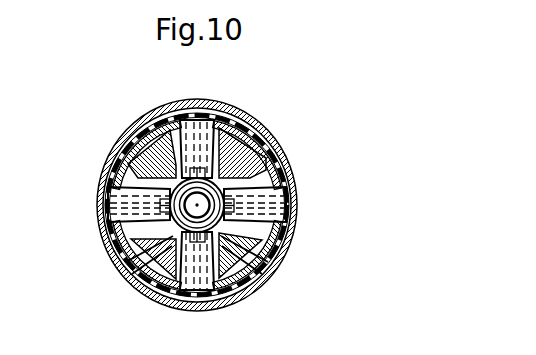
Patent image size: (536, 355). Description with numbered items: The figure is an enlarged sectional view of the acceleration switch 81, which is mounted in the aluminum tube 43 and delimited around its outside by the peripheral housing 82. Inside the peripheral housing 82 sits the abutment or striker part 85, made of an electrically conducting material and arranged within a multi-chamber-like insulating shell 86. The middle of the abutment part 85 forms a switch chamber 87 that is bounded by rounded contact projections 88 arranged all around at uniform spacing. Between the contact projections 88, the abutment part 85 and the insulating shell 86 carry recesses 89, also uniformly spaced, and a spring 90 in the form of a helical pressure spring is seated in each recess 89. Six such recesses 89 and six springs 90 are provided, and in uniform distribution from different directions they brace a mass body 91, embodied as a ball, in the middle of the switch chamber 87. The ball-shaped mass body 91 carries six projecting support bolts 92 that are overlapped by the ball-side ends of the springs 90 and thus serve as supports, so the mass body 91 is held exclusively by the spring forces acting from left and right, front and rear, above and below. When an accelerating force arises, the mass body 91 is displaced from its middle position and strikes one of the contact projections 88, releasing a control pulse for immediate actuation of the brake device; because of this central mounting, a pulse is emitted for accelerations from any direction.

The acceleration switch 81 is at (360, 103).
The peripheral housing 82 is at (137, 151).
The aluminum tube 43 is at (172, 106).
The abutment part 85 is at (143, 165).
The insulating shell 86 is at (112, 191).
The switch chamber 87 is at (175, 226).
The contact projections 88 is at (172, 160).
The recesses 89 is at (170, 224).
The springs 90 is at (184, 261).
The mass body 91 is at (241, 274).
The support bolts 92 is at (203, 119).